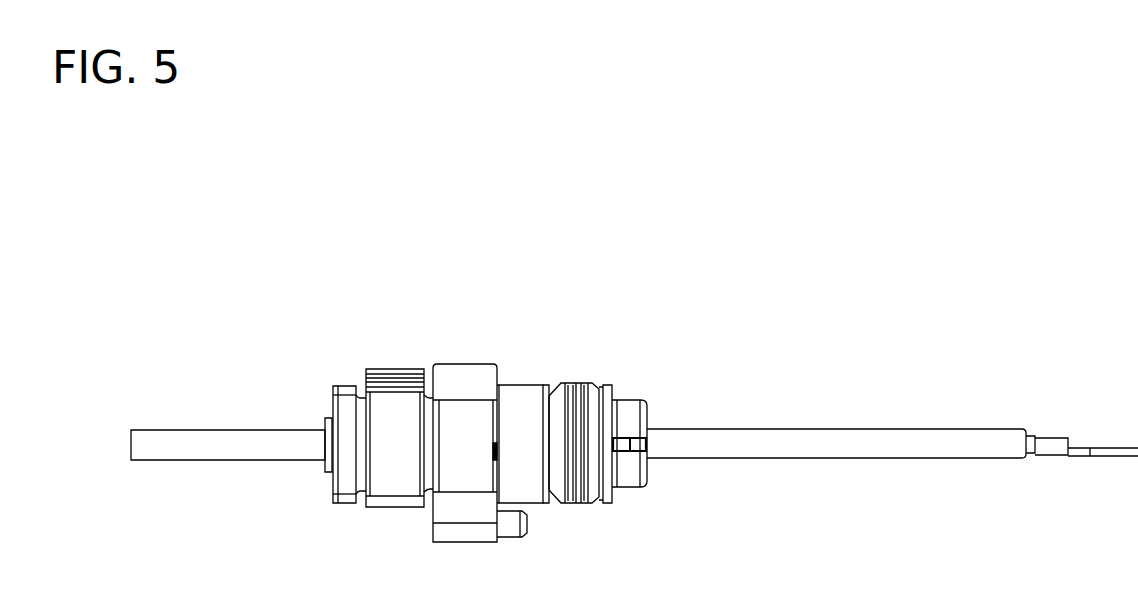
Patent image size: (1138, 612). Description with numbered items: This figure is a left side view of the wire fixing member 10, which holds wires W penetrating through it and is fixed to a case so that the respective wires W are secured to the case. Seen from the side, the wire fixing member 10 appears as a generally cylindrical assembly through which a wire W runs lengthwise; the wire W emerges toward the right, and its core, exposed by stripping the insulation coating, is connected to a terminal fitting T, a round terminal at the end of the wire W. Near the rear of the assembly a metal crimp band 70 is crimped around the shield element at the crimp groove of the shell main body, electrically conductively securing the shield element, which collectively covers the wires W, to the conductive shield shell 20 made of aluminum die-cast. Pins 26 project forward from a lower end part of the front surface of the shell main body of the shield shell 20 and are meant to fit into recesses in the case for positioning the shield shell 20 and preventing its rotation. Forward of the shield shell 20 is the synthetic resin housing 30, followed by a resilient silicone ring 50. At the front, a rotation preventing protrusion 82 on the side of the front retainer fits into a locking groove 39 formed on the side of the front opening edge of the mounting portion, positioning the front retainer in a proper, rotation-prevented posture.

The wire fixing member 10 is at (481, 205).
The crimp band 70 is at (389, 372).
The shield shell 20 is at (462, 360).
The pins 26 is at (509, 528).
The housing 30 is at (515, 380).
The ring 50 is at (572, 380).
The locking groove 39 is at (642, 468).
The rotation preventing protrusion 82 is at (623, 440).
The wire W is at (862, 443).
The terminal fitting T is at (1113, 411).